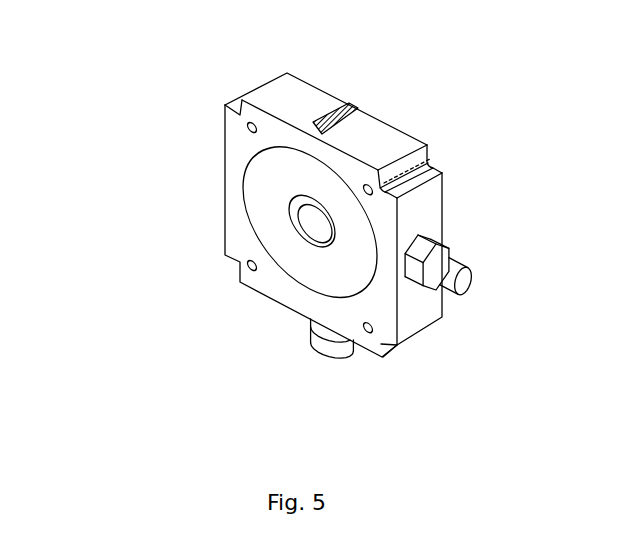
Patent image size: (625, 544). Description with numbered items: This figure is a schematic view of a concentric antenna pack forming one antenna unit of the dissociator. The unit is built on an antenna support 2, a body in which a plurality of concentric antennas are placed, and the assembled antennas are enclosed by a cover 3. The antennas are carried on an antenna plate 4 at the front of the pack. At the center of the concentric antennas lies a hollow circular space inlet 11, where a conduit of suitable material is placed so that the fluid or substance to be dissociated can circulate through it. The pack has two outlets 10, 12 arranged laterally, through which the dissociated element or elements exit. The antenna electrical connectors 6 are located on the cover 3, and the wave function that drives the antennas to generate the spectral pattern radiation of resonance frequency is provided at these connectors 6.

The antenna support 2 is at (227, 182).
The cover 3 is at (392, 140).
The antenna plate 4 is at (282, 232).
The antenna electrical connectors 6 is at (352, 107).
The outlet 10 is at (328, 345).
The circular space inlet 11 is at (336, 238).
The outlet 12 is at (443, 270).